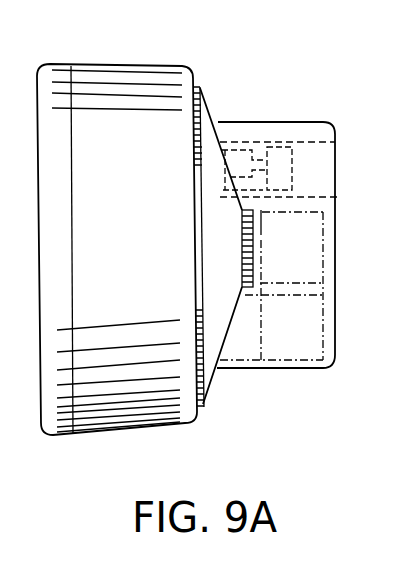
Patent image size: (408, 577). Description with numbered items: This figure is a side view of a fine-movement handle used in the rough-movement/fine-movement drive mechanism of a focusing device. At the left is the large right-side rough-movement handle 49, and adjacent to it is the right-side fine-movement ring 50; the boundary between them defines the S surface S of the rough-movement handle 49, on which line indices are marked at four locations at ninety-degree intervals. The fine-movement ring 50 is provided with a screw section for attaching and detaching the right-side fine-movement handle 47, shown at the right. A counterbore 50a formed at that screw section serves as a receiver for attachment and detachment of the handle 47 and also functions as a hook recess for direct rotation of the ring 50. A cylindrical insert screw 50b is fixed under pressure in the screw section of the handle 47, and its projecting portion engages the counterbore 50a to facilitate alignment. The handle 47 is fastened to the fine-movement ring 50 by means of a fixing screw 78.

The S surface S is at (196, 63).
The right-side rough-movement handle 49 is at (137, 75).
The right-side fine-movement ring 50 is at (212, 390).
The counterbore 50a is at (222, 177).
The insert screw 50b is at (243, 147).
The fixing screw 78 is at (281, 147).
The right-side fine-movement handle 47 is at (315, 370).